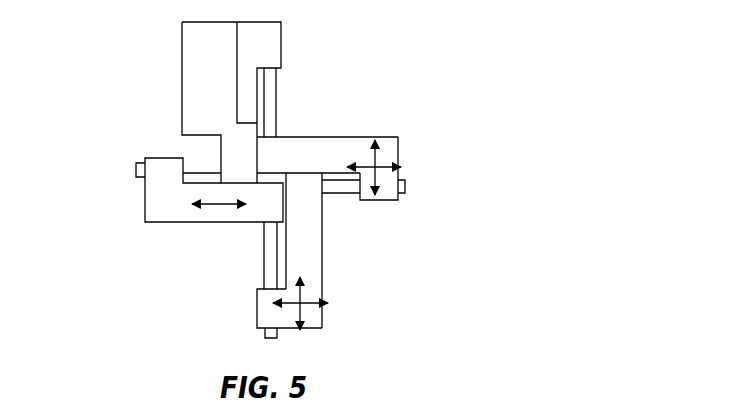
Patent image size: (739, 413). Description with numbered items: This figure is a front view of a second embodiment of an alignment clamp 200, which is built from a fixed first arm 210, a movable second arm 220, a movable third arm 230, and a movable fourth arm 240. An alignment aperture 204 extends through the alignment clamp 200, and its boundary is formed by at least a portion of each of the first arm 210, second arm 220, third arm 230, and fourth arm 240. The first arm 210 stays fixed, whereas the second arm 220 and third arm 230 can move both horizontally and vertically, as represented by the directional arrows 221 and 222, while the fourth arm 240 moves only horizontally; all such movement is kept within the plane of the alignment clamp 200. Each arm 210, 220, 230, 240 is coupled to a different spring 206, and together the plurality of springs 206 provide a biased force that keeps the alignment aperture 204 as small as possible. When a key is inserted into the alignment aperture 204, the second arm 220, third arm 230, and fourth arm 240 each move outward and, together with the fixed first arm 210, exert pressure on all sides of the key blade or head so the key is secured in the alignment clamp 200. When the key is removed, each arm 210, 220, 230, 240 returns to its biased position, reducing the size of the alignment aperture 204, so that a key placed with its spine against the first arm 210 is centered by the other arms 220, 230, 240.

The alignment clamp 200 is at (427, 115).
The alignment aperture 204 is at (265, 263).
The spring 206 is at (278, 88).
The first arm 210 is at (195, 42).
The second arm 220 is at (316, 143).
The directional arrow 221 is at (386, 165).
The directional arrow 222 is at (370, 155).
The third arm 230 is at (303, 249).
The fourth arm 240 is at (157, 200).